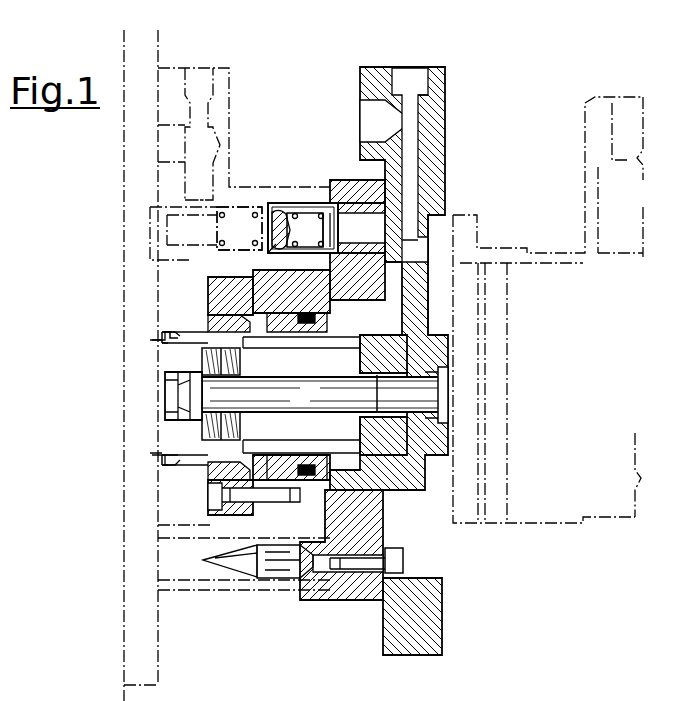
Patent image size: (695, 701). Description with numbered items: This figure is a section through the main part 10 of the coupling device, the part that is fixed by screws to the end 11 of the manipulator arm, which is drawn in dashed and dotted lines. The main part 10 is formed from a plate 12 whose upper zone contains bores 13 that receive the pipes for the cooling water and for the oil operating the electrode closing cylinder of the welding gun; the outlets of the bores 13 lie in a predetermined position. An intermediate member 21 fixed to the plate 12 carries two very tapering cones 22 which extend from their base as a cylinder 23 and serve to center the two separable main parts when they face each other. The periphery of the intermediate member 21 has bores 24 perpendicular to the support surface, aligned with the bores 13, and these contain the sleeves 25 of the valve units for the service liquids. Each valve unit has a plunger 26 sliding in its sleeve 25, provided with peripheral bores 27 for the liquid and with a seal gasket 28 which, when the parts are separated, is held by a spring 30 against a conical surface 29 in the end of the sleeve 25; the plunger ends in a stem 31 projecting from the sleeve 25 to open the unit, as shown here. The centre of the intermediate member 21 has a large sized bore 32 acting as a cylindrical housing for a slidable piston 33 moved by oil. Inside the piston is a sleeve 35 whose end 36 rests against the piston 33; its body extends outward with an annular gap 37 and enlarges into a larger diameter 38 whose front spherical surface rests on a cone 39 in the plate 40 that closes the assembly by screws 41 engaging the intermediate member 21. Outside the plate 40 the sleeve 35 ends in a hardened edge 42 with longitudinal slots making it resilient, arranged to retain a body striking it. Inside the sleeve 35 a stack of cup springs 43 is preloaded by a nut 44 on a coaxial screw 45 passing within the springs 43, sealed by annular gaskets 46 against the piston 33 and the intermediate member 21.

The main part 10 is at (452, 112).
The end of the manipulator arm 11 is at (545, 500).
The plate 12 is at (432, 172).
The bores 13 is at (418, 100).
The intermediate member 21 is at (405, 525).
The tapering cones 22 is at (238, 566).
The cylinder 23 is at (292, 568).
The bores 24 is at (437, 275).
The sleeve 25 is at (334, 198).
The plunger 26 is at (300, 212).
The peripheral bores 27 is at (290, 215).
The seal gasket 28 is at (272, 220).
The conical surface 29 is at (270, 245).
The spring 30 is at (340, 255).
The stem 31 is at (268, 230).
The large sized bore 32 is at (340, 312).
The piston 33 is at (322, 332).
The sleeve 35 is at (270, 338).
The end of the sleeve 36 is at (362, 358).
The annular gap 37 is at (370, 488).
The larger diameter 38 is at (205, 328).
The cone 39 is at (212, 325).
The plate 40 is at (218, 296).
The screws 41 is at (208, 500).
The hardened edge 42 is at (165, 340).
The cup springs 43 is at (232, 425).
The nut 44 is at (178, 396).
The coaxial screw 45 is at (345, 405).
The annular gaskets 46 is at (428, 384).